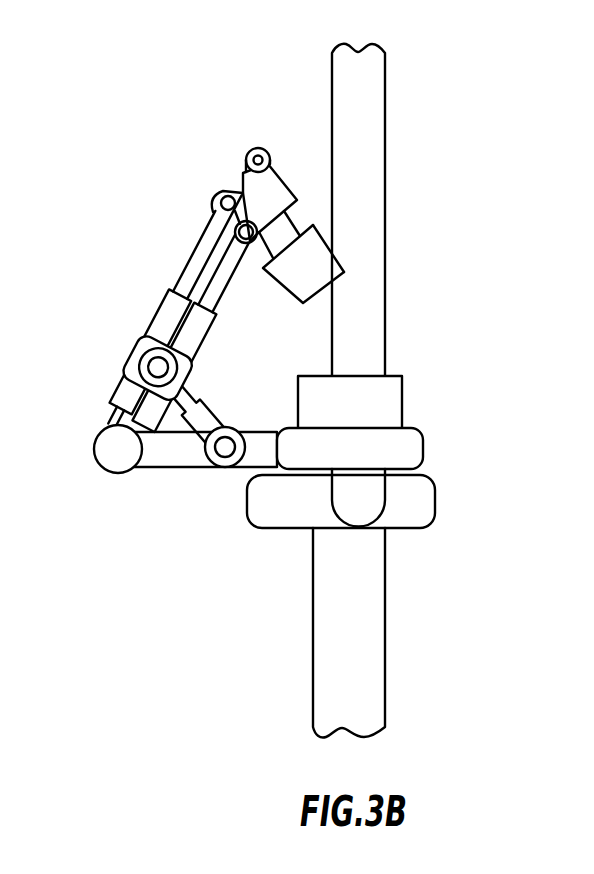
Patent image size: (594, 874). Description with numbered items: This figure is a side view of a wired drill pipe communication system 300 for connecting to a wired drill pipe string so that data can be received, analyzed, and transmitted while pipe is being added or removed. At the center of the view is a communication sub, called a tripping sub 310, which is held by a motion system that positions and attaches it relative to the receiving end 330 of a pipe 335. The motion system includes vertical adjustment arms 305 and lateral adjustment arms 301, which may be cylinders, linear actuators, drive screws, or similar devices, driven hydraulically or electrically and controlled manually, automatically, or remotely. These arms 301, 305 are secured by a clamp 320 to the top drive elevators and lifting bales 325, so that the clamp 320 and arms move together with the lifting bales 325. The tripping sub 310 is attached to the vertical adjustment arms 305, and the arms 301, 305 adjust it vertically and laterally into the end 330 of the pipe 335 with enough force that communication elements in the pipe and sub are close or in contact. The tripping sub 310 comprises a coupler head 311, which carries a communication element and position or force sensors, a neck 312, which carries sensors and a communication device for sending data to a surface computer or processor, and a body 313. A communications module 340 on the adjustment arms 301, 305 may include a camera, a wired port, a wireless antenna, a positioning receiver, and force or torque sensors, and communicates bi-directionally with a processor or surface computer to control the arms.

The wired drill pipe communication system 300 is at (165, 152).
The lateral adjustment arms 301 is at (172, 283).
The vertical adjustment arms 305 is at (183, 432).
The tripping sub 310 is at (341, 248).
The coupler head 311 is at (321, 235).
The neck 312 is at (293, 224).
The body 313 is at (283, 183).
The clamp 320 is at (423, 450).
The top drive elevators and lifting bales 325 is at (435, 493).
The end of the pipe 330 is at (402, 403).
The pipe 335 is at (385, 622).
The communications module 340 is at (257, 148).